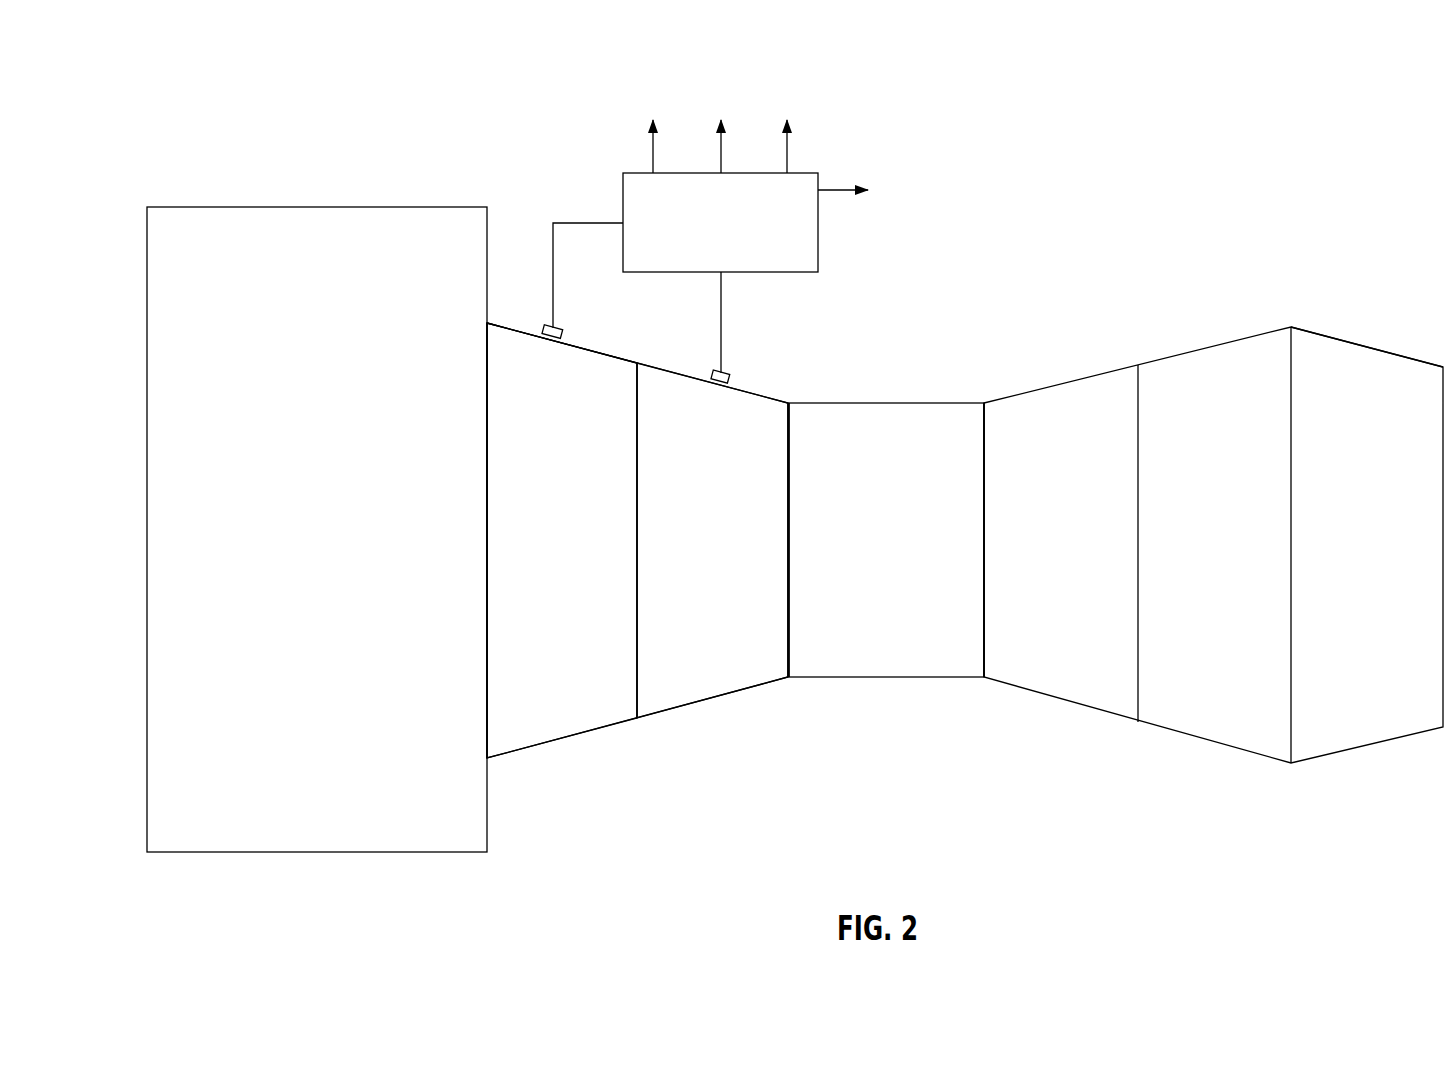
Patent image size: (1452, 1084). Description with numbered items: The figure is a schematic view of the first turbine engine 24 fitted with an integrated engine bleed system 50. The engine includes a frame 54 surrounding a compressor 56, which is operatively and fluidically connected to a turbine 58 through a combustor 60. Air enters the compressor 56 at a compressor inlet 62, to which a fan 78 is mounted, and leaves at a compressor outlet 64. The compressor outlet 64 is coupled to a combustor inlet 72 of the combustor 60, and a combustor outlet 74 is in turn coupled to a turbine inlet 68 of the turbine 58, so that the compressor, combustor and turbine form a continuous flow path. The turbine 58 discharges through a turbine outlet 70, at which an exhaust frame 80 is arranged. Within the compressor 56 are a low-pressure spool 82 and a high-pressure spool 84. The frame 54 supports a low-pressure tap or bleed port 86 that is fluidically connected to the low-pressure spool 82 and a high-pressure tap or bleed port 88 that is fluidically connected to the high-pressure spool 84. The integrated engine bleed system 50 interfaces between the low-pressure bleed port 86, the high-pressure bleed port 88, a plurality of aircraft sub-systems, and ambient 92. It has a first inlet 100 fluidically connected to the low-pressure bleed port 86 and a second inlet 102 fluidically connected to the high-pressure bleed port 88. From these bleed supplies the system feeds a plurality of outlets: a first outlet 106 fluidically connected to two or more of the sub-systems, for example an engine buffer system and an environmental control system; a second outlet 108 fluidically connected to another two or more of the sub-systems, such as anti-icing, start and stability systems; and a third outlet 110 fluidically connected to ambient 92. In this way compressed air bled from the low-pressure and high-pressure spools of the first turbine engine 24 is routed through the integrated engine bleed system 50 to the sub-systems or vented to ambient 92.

The first turbine engine 24 is at (297, 67).
The fan 78 is at (167, 345).
The compressor 56 is at (510, 460).
The frame 54 is at (531, 333).
The compressor inlet 62 is at (487, 675).
The low-pressure spool 82 is at (575, 550).
The high-pressure spool 84 is at (728, 550).
The combustor inlet 72 is at (789, 470).
The combustor 60 is at (918, 655).
The compressor outlet 64 is at (789, 585).
The turbine inlet 68 is at (984, 490).
The combustor outlet 74 is at (984, 570).
The turbine 58 is at (1040, 382).
The turbine outlet 70 is at (1292, 528).
The exhaust frame 80 is at (1383, 355).
The integrated engine bleed system 50 is at (808, 280).
The low-pressure bleed port 86 is at (556, 328).
The high-pressure bleed port 88 is at (714, 372).
The first inlet 100 is at (598, 218).
The second inlet 102 is at (722, 347).
The first outlet 106 is at (652, 152).
The second outlet 108 is at (720, 150).
The third outlet 110 is at (786, 145).
The ambient 92 is at (848, 189).